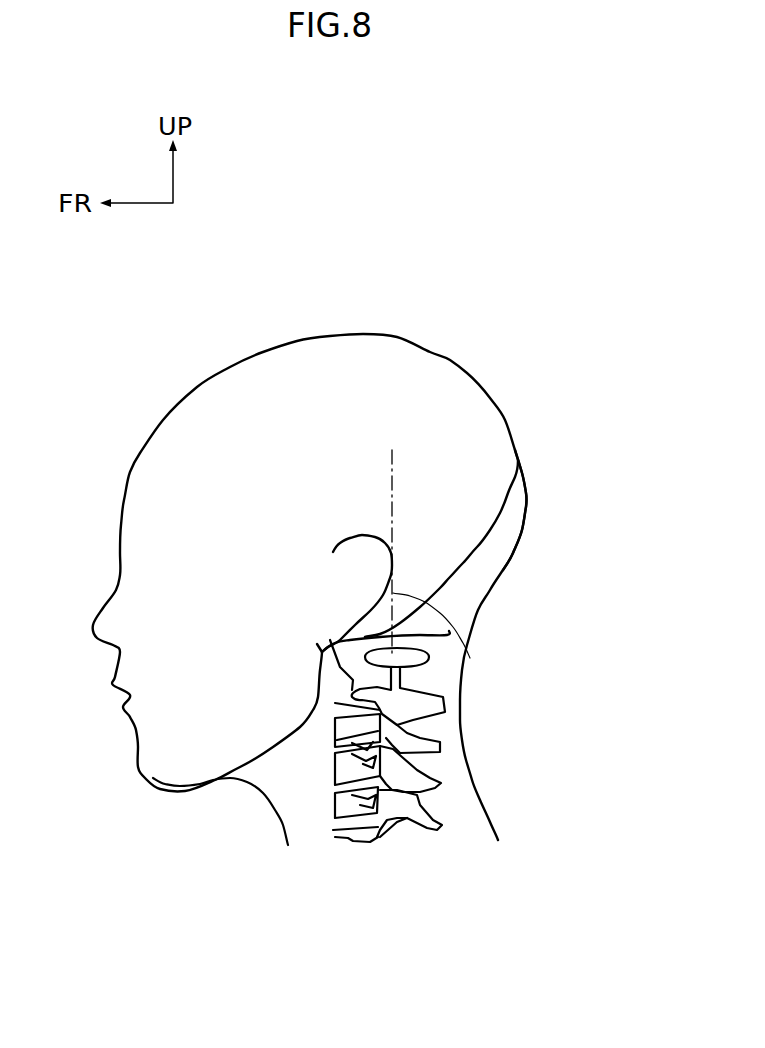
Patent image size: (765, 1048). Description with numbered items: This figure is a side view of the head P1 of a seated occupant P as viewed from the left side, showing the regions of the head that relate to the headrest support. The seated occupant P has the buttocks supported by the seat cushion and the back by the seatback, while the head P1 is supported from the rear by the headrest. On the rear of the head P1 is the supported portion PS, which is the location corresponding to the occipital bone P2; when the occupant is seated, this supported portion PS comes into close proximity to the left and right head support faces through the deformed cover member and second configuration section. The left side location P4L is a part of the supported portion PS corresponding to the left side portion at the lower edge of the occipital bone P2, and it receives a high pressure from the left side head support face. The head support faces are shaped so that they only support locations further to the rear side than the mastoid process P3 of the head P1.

The seated occupant P is at (362, 549).
The head P1 is at (401, 329).
The occipital bone P2 is at (513, 503).
The supported portion PS is at (477, 515).
The left side location P4L is at (460, 598).
The mastoid process P3 is at (470, 652).